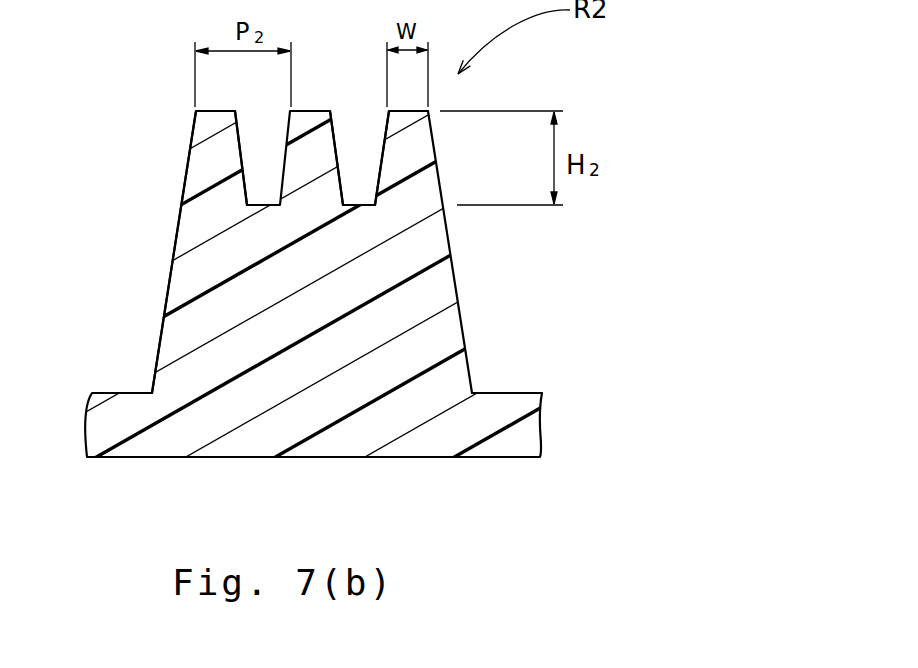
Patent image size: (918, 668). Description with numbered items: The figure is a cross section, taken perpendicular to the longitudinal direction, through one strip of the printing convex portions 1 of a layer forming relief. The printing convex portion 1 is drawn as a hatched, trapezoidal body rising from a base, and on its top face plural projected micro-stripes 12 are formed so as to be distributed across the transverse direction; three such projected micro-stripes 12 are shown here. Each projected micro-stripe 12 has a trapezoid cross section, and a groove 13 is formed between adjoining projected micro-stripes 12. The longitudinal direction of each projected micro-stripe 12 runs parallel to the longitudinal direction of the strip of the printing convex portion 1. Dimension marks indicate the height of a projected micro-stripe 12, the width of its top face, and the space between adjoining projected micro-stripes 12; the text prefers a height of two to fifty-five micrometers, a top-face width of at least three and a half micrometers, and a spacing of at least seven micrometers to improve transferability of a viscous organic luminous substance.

The printing convex portion 1 is at (177, 333).
The projected micro-stripe 12 is at (188, 165).
The groove 13 is at (362, 204).